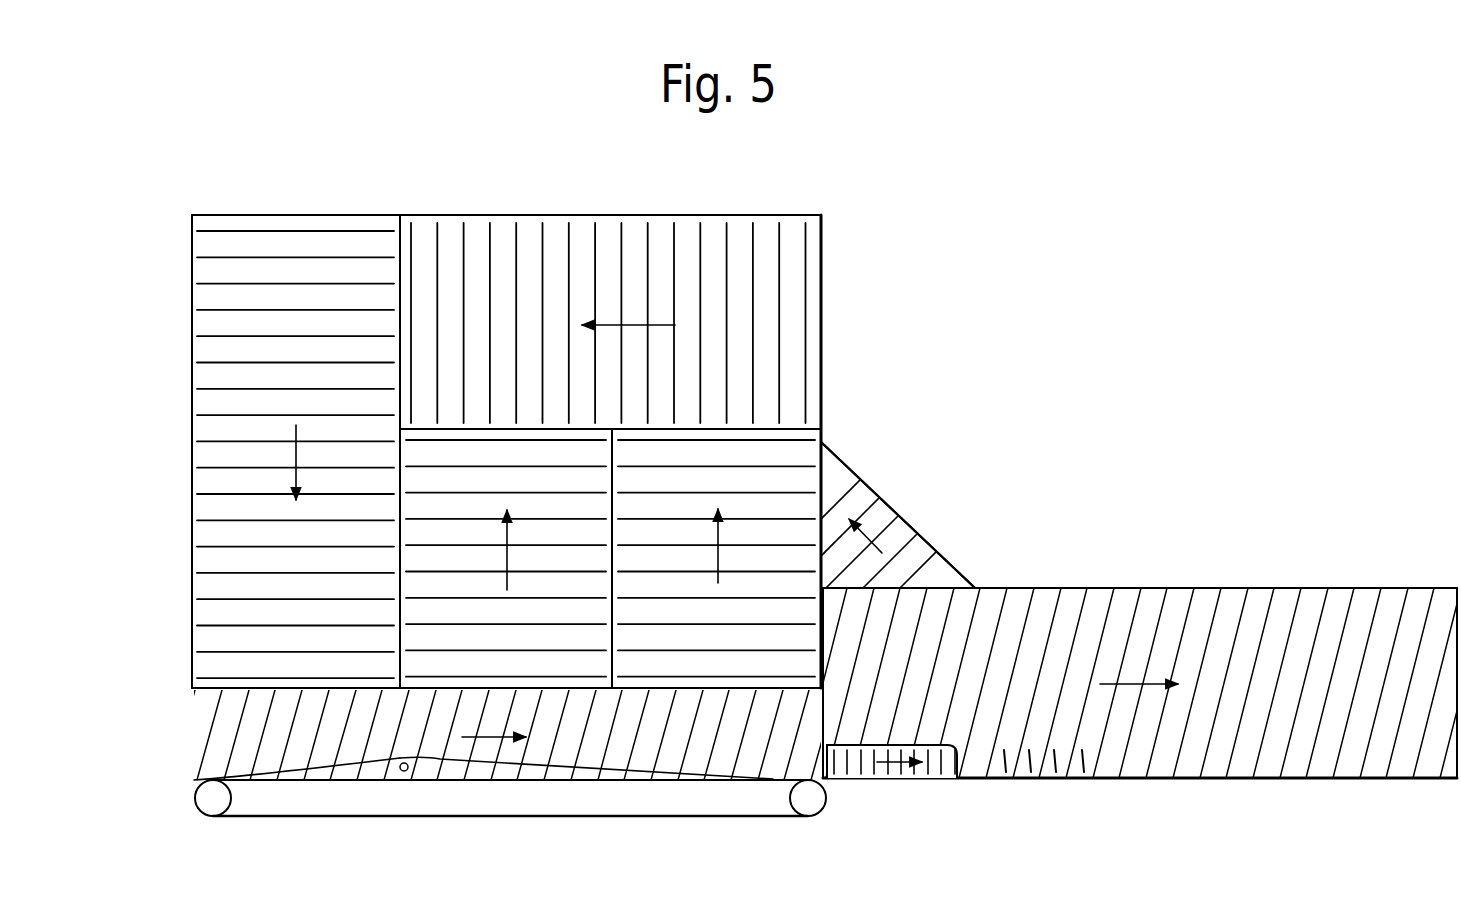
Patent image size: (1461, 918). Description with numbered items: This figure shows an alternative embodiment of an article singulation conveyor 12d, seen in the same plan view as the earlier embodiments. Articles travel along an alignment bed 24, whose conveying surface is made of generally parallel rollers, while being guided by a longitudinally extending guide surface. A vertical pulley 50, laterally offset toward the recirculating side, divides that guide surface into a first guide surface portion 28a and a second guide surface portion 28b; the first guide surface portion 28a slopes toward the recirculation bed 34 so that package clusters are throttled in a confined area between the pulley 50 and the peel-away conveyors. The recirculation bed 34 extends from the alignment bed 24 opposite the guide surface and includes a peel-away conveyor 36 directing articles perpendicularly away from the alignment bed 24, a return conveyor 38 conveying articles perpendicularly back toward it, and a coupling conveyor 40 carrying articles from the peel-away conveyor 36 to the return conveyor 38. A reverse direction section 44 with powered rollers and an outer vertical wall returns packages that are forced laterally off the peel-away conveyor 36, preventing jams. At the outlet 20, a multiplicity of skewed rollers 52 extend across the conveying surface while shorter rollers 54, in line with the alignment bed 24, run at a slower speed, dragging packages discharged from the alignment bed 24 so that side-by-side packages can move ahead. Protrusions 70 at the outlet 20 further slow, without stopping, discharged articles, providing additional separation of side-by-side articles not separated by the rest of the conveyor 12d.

The article singulation conveyor 12d is at (823, 352).
The outlet 20 is at (1116, 645).
The alignment bed 24 is at (190, 783).
The first guide surface portion 28a is at (262, 776).
The second guide surface portion 28b is at (535, 762).
The recirculation bed 34 is at (824, 450).
The peel-away conveyor 36 is at (823, 480).
The return conveyor 38 is at (242, 216).
The coupling conveyor 40 is at (823, 250).
The reverse direction section 44 is at (934, 531).
The vertical pulley 50 is at (407, 772).
The skewed rollers 52 is at (1243, 605).
The shorter rollers 54 is at (962, 763).
The protrusions 70 is at (1088, 804).